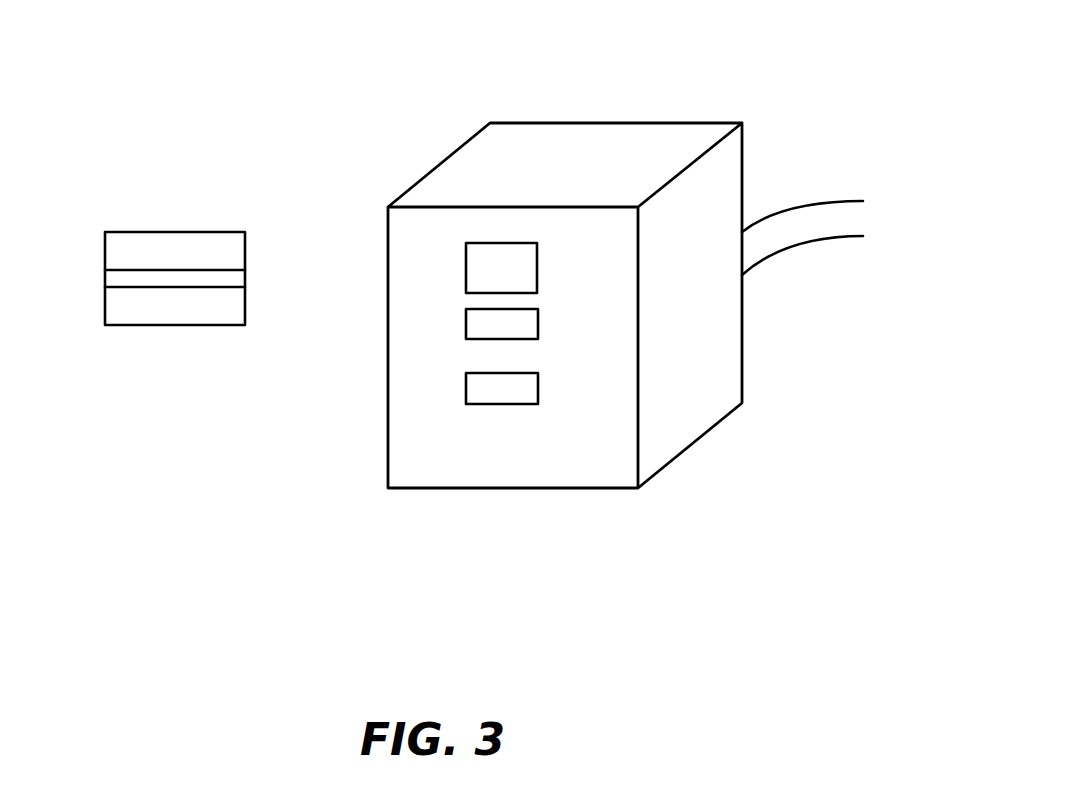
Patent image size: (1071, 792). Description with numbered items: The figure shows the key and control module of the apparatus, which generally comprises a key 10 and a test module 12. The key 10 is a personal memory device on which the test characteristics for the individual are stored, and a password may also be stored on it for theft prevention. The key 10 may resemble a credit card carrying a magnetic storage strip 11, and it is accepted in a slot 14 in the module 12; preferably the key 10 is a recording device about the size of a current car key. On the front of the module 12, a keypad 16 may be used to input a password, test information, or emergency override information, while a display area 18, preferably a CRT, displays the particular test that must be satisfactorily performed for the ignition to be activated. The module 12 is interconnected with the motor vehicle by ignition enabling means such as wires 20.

The key 10 is at (135, 240).
The magnetic storage strip 11 is at (108, 277).
The test module 12 is at (558, 142).
The slot 14 is at (466, 390).
The keypad 16 is at (466, 323).
The display area 18 is at (466, 271).
The wires 20 is at (775, 211).